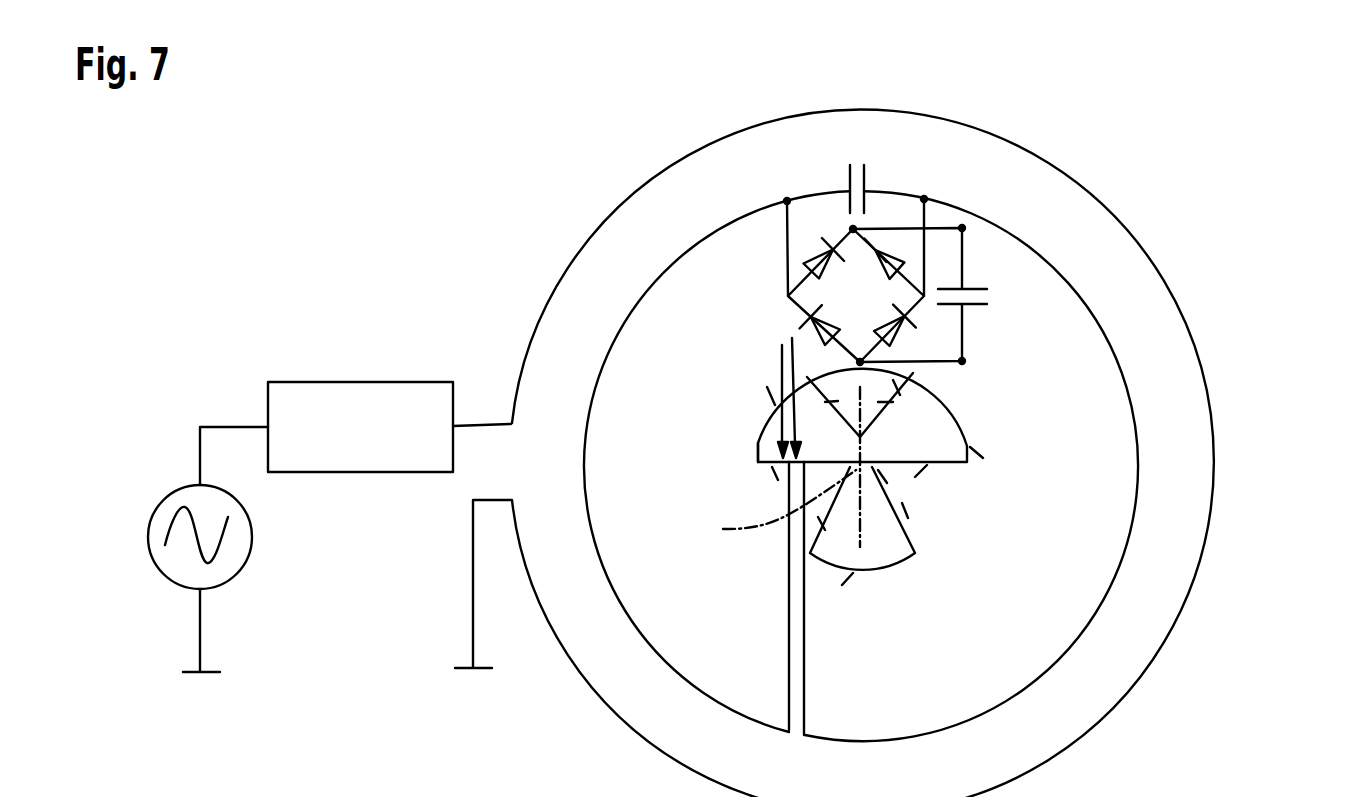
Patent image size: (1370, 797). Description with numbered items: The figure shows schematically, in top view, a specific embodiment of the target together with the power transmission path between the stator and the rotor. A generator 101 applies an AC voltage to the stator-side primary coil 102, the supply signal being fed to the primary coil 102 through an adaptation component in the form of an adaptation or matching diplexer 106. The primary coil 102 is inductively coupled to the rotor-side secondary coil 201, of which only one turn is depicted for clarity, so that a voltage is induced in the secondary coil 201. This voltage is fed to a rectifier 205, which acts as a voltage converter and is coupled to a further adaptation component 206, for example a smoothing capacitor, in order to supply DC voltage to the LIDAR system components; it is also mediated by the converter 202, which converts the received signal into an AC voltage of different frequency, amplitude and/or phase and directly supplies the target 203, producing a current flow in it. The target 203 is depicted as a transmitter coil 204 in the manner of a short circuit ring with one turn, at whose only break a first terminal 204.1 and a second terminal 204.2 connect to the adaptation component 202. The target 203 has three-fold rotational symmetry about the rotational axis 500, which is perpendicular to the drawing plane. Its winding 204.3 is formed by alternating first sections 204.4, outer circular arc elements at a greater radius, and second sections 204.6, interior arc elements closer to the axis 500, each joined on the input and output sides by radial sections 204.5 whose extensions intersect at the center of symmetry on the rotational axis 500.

The generator 101 is at (148, 537).
The adaptation diplexer 106 is at (340, 382).
The primary coil 102 is at (1112, 712).
The secondary coil 201 is at (1132, 528).
The converter 202 is at (848, 178).
The rectifier 205 is at (766, 253).
The adaptation component 206 is at (975, 289).
The target 203 is at (986, 411).
The transmitter coil 204 is at (1043, 552).
The first terminal 204.1 is at (778, 345).
The second terminal 204.2 is at (792, 338).
The winding 204.3 is at (758, 446).
The first section 204.4 is at (766, 405).
The radial section 204.5 is at (770, 470).
The second section 204.6 is at (882, 418).
The rotational axis 500 is at (766, 467).